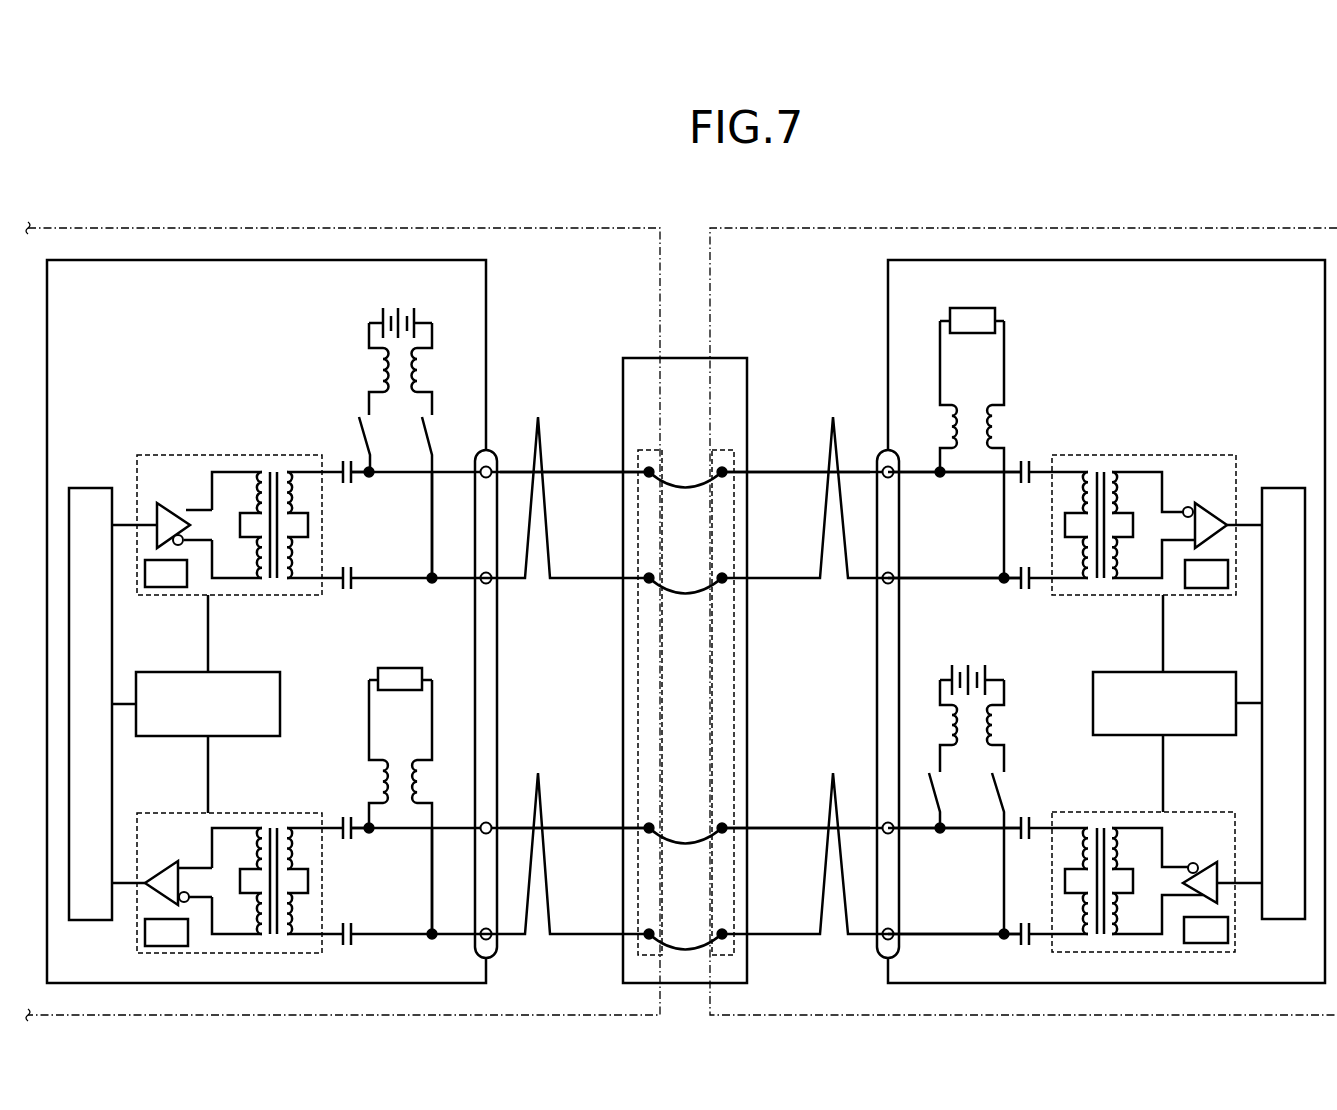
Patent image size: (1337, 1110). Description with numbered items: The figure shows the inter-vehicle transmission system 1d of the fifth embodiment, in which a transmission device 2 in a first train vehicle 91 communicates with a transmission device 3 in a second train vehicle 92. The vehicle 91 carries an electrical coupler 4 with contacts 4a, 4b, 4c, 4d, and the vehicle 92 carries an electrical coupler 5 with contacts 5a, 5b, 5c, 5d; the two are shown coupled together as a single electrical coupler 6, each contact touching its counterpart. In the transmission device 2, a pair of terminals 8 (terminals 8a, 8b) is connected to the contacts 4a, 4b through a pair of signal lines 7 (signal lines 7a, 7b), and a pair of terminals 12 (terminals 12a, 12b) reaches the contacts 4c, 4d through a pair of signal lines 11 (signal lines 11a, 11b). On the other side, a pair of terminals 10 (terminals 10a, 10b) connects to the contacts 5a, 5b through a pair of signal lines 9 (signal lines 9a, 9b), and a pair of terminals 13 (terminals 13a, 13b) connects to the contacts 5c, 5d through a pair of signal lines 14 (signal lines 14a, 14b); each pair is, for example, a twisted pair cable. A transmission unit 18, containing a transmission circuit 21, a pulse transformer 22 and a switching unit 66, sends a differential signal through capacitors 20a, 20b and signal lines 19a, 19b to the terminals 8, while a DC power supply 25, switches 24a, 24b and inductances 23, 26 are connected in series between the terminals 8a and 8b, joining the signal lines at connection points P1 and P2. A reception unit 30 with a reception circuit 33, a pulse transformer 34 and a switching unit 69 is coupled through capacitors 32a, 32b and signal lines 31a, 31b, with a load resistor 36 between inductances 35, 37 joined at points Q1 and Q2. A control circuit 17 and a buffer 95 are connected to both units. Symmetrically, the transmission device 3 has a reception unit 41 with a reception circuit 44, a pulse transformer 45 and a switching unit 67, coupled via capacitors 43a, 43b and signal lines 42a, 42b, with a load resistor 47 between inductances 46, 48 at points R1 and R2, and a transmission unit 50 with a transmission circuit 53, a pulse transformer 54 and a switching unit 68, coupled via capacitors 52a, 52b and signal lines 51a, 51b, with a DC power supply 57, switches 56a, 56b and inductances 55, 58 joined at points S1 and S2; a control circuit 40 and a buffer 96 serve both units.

The inter-vehicle transmission system 1d is at (950, 190).
The vehicle 91 is at (310, 228).
The vehicle 92 is at (1048, 228).
The transmission device 2 is at (126, 262).
The transmission device 3 is at (1223, 262).
The control circuit 17 is at (90, 488).
The control circuit 40 is at (1282, 488).
The buffer 95 is at (230, 672).
The buffer 96 is at (1195, 672).
The transmission unit 18 is at (227, 503).
The reception unit 30 is at (222, 858).
The reception unit 41 is at (1157, 501).
The transmission unit 50 is at (1162, 860).
The transmission circuit 21 is at (160, 500).
The reception circuit 33 is at (160, 860).
The reception circuit 44 is at (1210, 500).
The transmission circuit 53 is at (1212, 860).
The pulse transformer 22 is at (268, 452).
The pulse transformer 34 is at (268, 810).
The pulse transformer 45 is at (1102, 452).
The pulse transformer 54 is at (1102, 810).
The switching unit 66 is at (160, 588).
The switching unit 67 is at (1210, 588).
The switching unit 68 is at (1212, 943).
The switching unit 69 is at (160, 946).
The capacitor 20a is at (345, 462).
The capacitor 20b is at (345, 568).
The capacitor 32a is at (345, 818).
The capacitor 32b is at (345, 924).
The capacitor 43a is at (1025, 460).
The capacitor 43b is at (1025, 567).
The capacitor 52a is at (1025, 817).
The capacitor 52b is at (1025, 923).
The signal line 19a is at (436, 468).
The signal line 19b is at (436, 574).
The signal line 31a is at (436, 824).
The signal line 31b is at (436, 930).
The signal line 42a is at (922, 468).
The signal line 42b is at (925, 574).
The signal line 51a is at (965, 834).
The signal line 51b is at (925, 930).
The inductance 23 is at (378, 352).
The inductance 26 is at (423, 352).
The inductance 35 is at (380, 760).
The inductance 37 is at (426, 760).
The inductance 46 is at (950, 405).
The inductance 48 is at (1000, 405).
The inductance 55 is at (946, 705).
The inductance 58 is at (1002, 712).
The DC power supply 25 is at (418, 312).
The DC power supply 57 is at (985, 676).
The load resistor 36 is at (415, 668).
The load resistor 47 is at (995, 310).
The switch 24a is at (356, 404).
The switch 24b is at (440, 404).
The switch 56a is at (928, 762).
The switch 56b is at (1016, 746).
The pair of terminals 8 is at (524, 414).
The terminal 8a is at (487, 446).
The terminal 8b is at (495, 560).
The pair of terminals 12 is at (532, 768).
The terminal 12a is at (484, 820).
The terminal 12b is at (493, 920).
The pair of terminals 10 is at (836, 414).
The terminal 10a is at (887, 446).
The terminal 10b is at (878, 560).
The pair of terminals 13 is at (841, 768).
The terminal 13a is at (887, 810).
The terminal 13b is at (878, 920).
The pair of signal lines 7 is at (540, 450).
The signal line 7a is at (583, 468).
The signal line 7b is at (563, 572).
The pair of signal lines 11 is at (540, 806).
The signal line 11a is at (583, 825).
The signal line 11b is at (563, 928).
The pair of signal lines 9 is at (871, 450).
The signal line 9a is at (790, 468).
The signal line 9b is at (803, 572).
The pair of signal lines 14 is at (871, 806).
The signal line 14a is at (790, 825).
The signal line 14b is at (803, 928).
The electrical coupler 6 is at (740, 358).
The electrical coupler 4 is at (625, 679).
The contact 4a is at (645, 477).
The contact 4b is at (645, 583).
The contact 4c is at (645, 833).
The contact 4d is at (645, 939).
The electrical coupler 5 is at (749, 679).
The contact 5a is at (727, 477).
The contact 5b is at (727, 583).
The contact 5c is at (727, 833).
The contact 5d is at (727, 939).
The connection point P1 is at (370, 486).
The connection point P2 is at (418, 567).
The connection point Q1 is at (369, 843).
The connection point Q2 is at (417, 923).
The connection point R1 is at (941, 486).
The connection point R2 is at (990, 567).
The connection point S1 is at (942, 843).
The connection point S2 is at (991, 923).